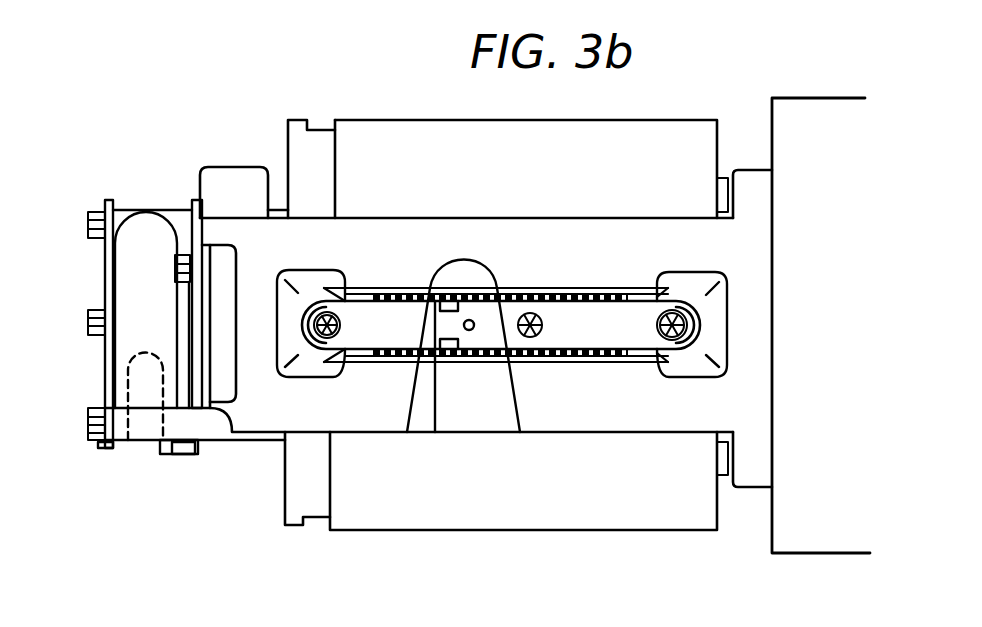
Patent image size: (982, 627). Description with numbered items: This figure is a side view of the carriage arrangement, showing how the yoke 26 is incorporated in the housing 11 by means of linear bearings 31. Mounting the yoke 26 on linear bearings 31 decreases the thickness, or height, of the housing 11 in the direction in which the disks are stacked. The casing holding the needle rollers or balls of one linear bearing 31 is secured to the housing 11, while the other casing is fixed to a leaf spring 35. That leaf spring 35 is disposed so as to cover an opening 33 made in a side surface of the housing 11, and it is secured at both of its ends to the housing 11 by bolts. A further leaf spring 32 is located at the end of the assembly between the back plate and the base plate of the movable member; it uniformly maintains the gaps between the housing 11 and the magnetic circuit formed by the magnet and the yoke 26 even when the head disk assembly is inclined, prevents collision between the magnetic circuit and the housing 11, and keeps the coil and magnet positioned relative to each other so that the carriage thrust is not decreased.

The housing 11 is at (757, 210).
The yoke 26 is at (307, 500).
The linear bearing 31 is at (480, 335).
The leaf spring 32 is at (127, 448).
The opening 33 is at (600, 284).
The leaf spring 35 is at (597, 332).